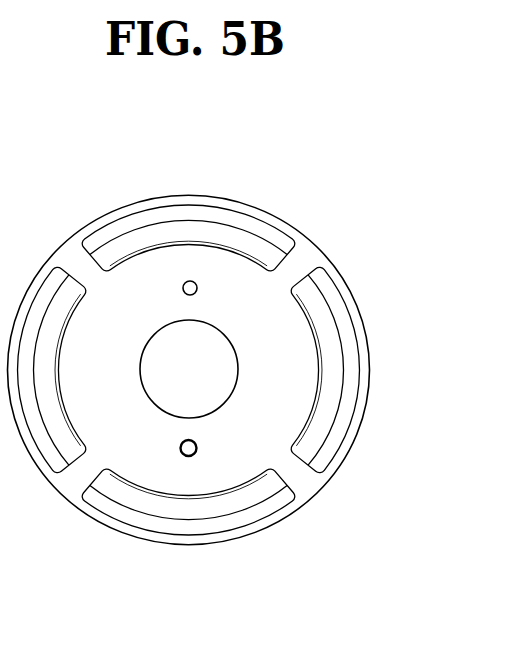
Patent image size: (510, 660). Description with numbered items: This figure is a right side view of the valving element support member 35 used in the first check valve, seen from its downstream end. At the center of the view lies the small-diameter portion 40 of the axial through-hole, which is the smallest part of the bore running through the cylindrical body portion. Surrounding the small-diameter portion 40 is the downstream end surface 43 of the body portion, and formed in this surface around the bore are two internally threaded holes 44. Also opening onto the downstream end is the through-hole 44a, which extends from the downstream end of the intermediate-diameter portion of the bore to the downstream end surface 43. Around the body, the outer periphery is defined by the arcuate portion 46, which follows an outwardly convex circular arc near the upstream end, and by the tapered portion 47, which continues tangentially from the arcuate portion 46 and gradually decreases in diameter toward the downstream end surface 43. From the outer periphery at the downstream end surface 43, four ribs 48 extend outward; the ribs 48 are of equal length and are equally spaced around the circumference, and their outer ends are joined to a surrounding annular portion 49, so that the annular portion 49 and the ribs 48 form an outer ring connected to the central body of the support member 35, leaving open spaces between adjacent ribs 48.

The valving element support member 35 is at (233, 182).
The small-diameter portion 40 is at (165, 407).
The downstream end surface 43 is at (227, 267).
The internally threaded holes 44 is at (190, 447).
The through-hole 44a is at (193, 281).
The arcuate portion 46 is at (107, 242).
The tapered portion 47 is at (180, 230).
The ribs 48 is at (283, 272).
The annular portion 49 is at (282, 230).